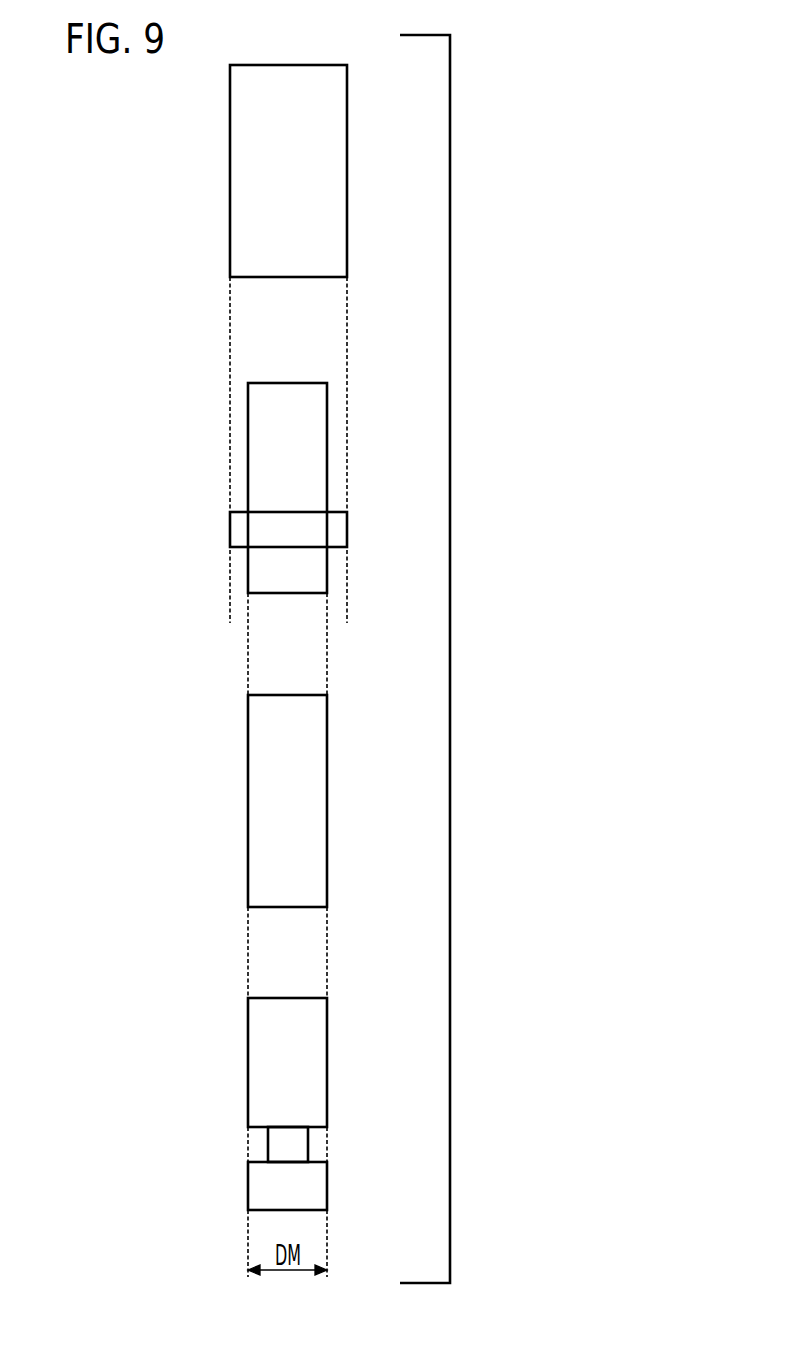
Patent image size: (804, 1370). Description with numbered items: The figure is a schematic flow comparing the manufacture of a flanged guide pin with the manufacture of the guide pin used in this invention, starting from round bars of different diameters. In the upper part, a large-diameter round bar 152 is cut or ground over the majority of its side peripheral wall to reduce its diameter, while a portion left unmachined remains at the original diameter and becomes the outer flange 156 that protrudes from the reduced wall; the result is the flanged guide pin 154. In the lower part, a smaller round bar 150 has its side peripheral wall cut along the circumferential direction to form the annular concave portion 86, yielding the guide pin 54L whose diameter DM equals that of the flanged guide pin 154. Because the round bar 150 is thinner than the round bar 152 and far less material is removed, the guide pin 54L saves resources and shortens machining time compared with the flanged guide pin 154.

The round bar 152 is at (248, 155).
The flanged guide pin 154 is at (265, 437).
The outer flange 156 is at (240, 527).
The round bar 150 is at (265, 763).
The guide pin 54L is at (265, 1046).
The annular concave portion 86 is at (308, 1145).